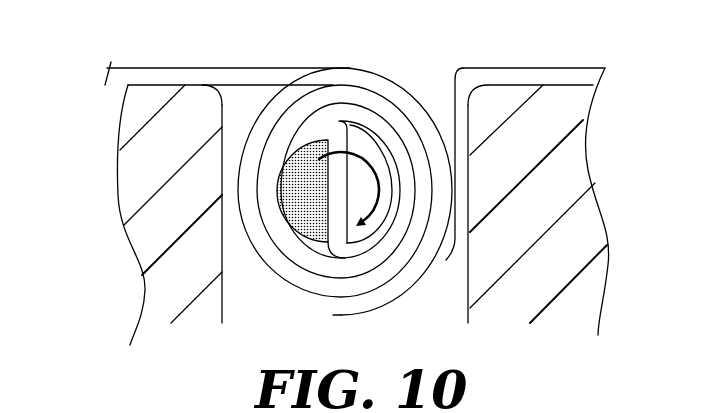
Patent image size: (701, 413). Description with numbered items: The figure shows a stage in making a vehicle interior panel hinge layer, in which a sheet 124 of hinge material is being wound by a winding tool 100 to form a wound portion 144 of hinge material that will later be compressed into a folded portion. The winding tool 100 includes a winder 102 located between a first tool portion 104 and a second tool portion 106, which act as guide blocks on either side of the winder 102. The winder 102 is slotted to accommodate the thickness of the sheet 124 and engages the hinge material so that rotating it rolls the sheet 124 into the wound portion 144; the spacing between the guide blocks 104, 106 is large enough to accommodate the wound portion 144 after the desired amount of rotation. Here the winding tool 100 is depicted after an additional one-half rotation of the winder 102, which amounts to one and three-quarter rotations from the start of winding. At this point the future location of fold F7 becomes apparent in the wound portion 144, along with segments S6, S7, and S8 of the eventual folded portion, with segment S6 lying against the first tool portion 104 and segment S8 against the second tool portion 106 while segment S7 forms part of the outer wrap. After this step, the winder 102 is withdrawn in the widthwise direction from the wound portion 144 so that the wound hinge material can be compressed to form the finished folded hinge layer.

The winding tool 100 is at (56, 78).
The winder 102 is at (311, 153).
The first tool portion 104 is at (158, 101).
The second tool portion 106 is at (536, 98).
The sheet 124 is at (213, 80).
The wound portion 144 is at (392, 278).
The segment S6 is at (225, 214).
The segment S7 is at (426, 122).
The segment S8 is at (465, 208).
The fold F7 is at (343, 314).